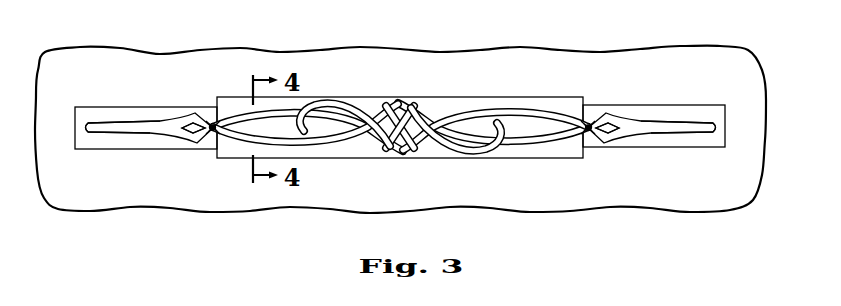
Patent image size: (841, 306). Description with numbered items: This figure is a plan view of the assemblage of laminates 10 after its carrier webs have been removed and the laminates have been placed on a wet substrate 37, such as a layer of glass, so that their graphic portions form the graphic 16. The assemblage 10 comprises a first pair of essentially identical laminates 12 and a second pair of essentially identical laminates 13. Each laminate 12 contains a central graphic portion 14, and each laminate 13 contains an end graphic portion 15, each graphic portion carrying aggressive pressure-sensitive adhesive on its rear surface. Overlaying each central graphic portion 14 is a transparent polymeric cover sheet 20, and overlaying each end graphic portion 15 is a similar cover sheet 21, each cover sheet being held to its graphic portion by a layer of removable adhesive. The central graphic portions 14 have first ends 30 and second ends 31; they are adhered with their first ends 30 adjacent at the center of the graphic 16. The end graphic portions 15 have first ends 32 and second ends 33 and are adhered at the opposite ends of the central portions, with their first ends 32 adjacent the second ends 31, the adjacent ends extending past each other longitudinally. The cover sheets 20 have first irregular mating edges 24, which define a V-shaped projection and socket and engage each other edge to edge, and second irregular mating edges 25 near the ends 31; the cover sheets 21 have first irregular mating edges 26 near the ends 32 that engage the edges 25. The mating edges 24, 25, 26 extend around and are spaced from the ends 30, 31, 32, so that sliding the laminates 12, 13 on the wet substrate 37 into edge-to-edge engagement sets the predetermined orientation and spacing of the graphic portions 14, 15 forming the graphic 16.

The assemblage of laminates 10 is at (588, 74).
The first pair of laminates 12 is at (318, 93).
The second pair of laminates 13 is at (94, 103).
The central graphic portion 14 is at (332, 148).
The end graphic portion 15 is at (112, 134).
The graphic 16 is at (456, 104).
The cover sheet 20 is at (353, 152).
The cover sheet 21 is at (147, 146).
The first irregular mating edge 24 is at (415, 117).
The second irregular mating edge 25 is at (212, 127).
The first irregular mating edge 26 is at (213, 131).
The first end 30 is at (390, 107).
The second end 31 is at (216, 127).
The first end 32 is at (202, 143).
The second end 33 is at (88, 127).
The substrate 37 is at (628, 195).